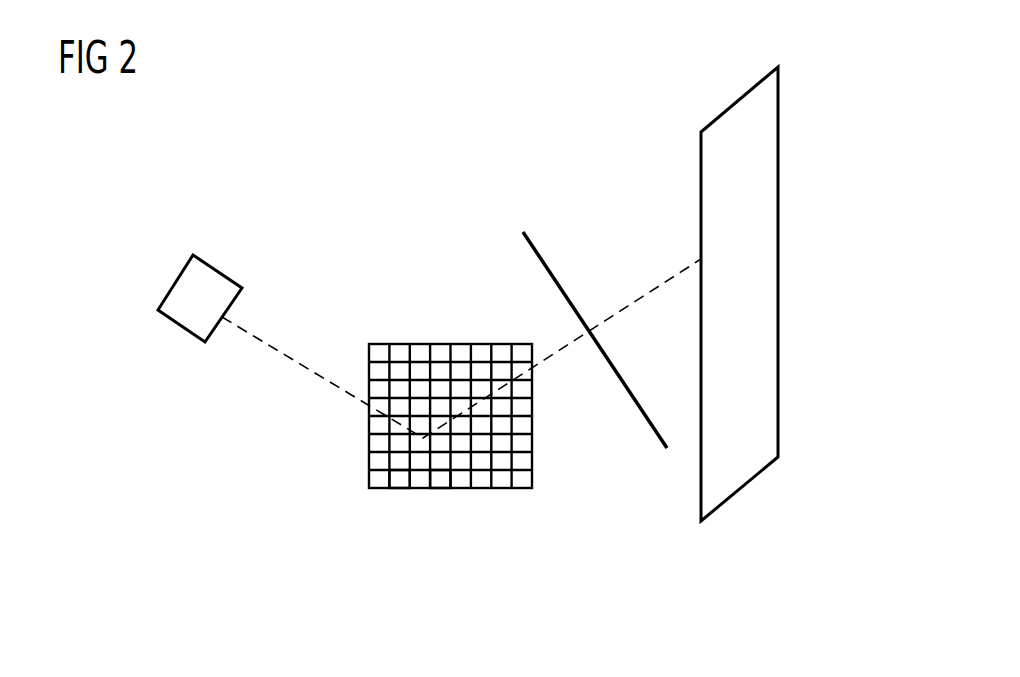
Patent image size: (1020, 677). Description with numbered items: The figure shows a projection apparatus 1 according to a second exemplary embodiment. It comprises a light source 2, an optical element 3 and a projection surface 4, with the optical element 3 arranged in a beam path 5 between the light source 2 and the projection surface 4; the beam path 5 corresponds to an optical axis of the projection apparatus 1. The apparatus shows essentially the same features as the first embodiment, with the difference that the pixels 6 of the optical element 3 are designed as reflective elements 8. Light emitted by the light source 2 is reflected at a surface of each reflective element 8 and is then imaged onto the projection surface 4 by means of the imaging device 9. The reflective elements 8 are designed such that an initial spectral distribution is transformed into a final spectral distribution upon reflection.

The projection apparatus 1 is at (360, 233).
The light source 2 is at (221, 272).
The optical element 3 is at (369, 463).
The projection surface 4 is at (700, 461).
The beam path 5 is at (303, 363).
The pixels 6 is at (398, 488).
The reflective elements 8 is at (438, 488).
The imaging device 9 is at (533, 243).